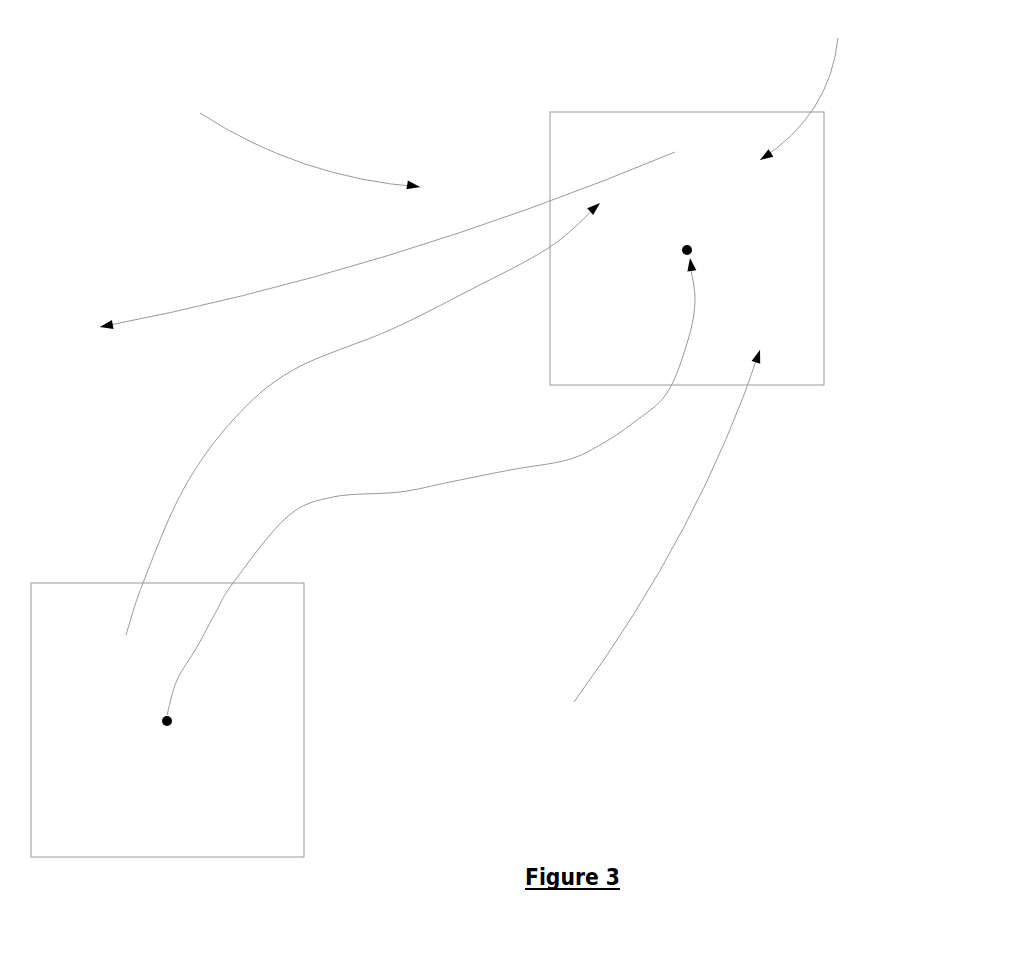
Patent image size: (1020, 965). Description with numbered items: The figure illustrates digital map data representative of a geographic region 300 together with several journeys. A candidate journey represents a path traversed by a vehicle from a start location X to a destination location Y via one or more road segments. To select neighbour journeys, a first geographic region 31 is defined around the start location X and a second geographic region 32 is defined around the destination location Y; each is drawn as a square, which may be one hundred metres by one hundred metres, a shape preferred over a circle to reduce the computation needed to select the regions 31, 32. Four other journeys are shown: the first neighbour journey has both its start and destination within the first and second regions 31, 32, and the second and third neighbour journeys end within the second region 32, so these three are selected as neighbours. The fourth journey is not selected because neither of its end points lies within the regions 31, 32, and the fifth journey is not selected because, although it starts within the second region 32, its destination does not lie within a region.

The geographic region 300 is at (456, 387).
The first geographic region 31 is at (167, 720).
The second geographic region 32 is at (687, 248).